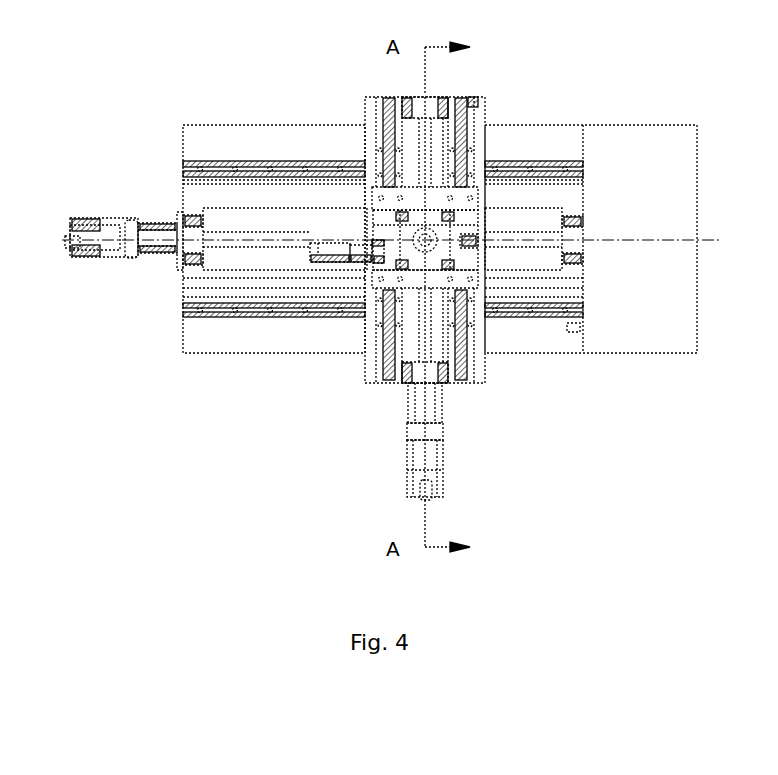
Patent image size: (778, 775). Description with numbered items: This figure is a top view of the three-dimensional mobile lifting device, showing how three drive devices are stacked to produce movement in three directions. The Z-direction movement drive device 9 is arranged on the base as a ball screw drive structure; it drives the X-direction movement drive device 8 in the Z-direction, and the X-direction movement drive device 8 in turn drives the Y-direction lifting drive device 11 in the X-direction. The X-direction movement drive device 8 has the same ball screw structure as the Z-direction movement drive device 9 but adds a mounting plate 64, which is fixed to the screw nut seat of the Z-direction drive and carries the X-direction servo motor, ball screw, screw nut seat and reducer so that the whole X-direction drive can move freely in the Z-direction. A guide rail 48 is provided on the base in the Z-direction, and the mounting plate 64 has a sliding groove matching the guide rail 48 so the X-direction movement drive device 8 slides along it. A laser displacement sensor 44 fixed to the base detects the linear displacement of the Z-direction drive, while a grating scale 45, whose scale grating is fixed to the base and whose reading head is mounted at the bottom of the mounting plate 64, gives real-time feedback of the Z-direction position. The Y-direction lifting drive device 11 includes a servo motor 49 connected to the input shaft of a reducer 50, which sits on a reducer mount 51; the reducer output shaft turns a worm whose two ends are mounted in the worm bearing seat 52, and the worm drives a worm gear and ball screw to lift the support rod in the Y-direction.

The X-direction movement drive device 8 is at (407, 433).
The Z-direction movement drive device 9 is at (173, 255).
The Y-direction lifting drive device 11 is at (352, 262).
The laser displacement sensor 44 is at (580, 320).
The grating scale 45 is at (557, 282).
The guide rail 48 is at (233, 315).
The servo motor 49 is at (337, 250).
The reducer 50 is at (353, 247).
The reducer mount 51 is at (373, 243).
The worm bearing seat 52 is at (383, 247).
The mounting plate 64 is at (375, 360).